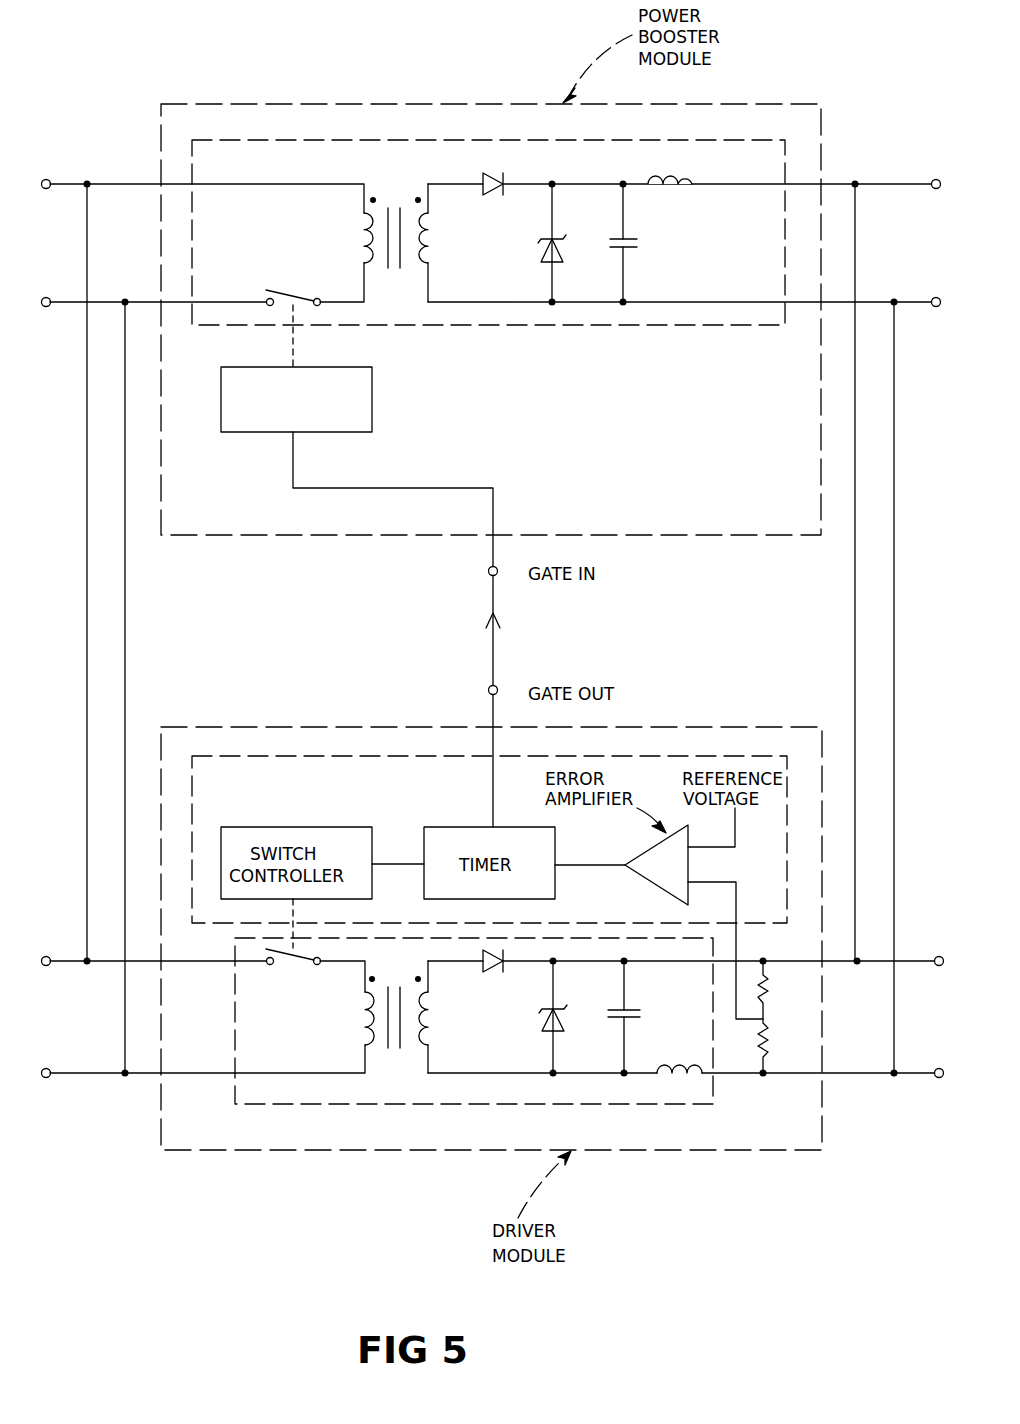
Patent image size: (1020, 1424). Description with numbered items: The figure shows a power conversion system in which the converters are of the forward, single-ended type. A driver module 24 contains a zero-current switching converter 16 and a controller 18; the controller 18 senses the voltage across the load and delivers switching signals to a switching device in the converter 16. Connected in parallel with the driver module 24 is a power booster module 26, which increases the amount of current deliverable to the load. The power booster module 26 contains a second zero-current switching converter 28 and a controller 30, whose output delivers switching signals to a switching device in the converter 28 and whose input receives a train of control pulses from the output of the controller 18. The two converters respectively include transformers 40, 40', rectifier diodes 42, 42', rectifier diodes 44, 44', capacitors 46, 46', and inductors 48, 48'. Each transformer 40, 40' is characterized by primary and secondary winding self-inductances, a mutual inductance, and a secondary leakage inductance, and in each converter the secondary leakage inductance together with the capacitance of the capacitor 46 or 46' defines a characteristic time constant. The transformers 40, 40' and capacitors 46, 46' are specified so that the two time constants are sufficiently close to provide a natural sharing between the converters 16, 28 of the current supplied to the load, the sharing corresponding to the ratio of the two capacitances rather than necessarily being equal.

The zero-current switching converter 16 is at (697, 1106).
The controller 18 is at (702, 755).
The driver module 24 is at (695, 1151).
The power booster module 26 is at (750, 537).
The zero-current switching converter 28 is at (712, 325).
The controller 30 is at (372, 390).
The transformer 40 is at (387, 1015).
The transformer 40' is at (397, 243).
The rectifier diode 42 is at (484, 976).
The rectifier diode 42' is at (514, 173).
The rectifier diode 44 is at (563, 1017).
The rectifier diode 44' is at (568, 243).
The capacitor 46 is at (639, 1017).
The capacitor 46' is at (638, 243).
The inductor 48 is at (682, 1049).
The inductor 48' is at (688, 165).